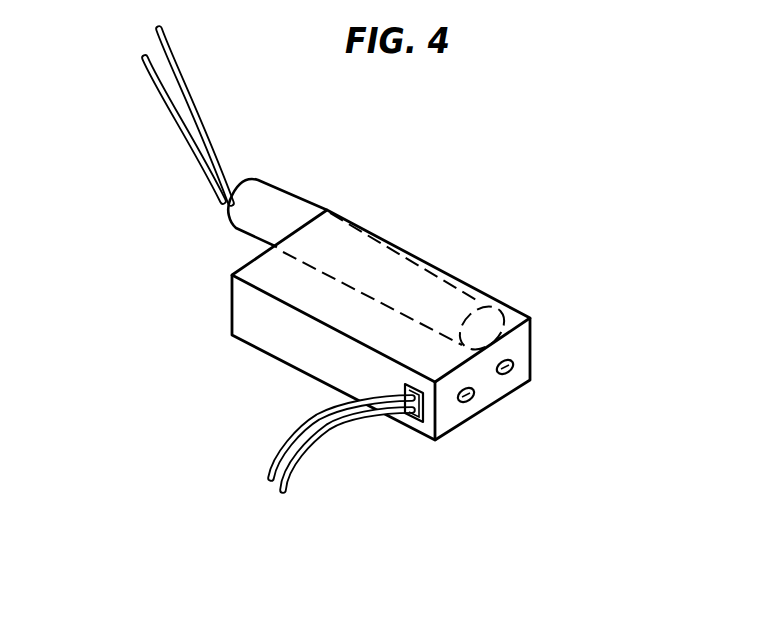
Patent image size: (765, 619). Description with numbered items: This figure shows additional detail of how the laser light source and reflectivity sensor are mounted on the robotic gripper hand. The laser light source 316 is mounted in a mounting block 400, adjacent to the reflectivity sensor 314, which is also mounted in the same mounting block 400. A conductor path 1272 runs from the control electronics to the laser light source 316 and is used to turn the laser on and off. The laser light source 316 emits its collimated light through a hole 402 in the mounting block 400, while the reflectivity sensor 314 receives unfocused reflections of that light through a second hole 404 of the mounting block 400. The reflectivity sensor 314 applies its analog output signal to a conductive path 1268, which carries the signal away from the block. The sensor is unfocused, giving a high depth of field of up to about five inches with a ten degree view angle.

The conductor path 1272 is at (187, 108).
The laser light source 316 is at (283, 207).
The mounting block 400 is at (303, 293).
The hole 402 is at (514, 369).
The hole 404 is at (476, 399).
The reflectivity sensor 314 is at (417, 423).
The conductive path 1268 is at (283, 425).